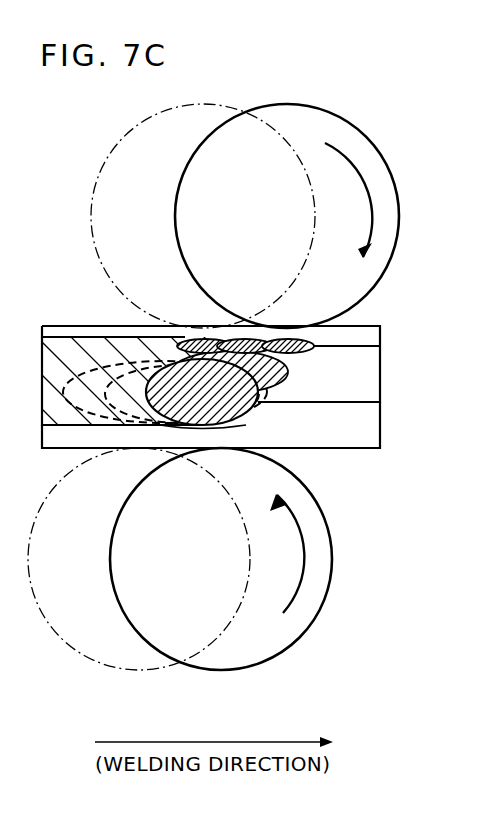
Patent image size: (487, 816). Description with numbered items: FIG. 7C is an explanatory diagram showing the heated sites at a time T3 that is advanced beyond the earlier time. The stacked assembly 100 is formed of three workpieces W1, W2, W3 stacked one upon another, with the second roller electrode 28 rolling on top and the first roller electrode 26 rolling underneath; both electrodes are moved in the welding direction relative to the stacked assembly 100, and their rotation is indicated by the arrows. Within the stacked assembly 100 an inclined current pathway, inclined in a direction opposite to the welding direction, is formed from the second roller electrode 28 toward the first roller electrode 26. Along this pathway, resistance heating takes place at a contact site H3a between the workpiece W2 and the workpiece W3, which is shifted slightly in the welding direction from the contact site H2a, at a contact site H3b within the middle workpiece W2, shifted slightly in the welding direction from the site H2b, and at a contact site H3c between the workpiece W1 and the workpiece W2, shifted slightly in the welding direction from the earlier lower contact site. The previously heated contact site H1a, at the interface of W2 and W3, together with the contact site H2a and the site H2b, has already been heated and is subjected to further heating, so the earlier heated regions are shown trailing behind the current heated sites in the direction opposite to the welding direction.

The second roller electrode 28 is at (95, 223).
The first roller electrode 26 is at (318, 598).
The stacked assembly 100 is at (243, 350).
The workpiece W1 is at (350, 435).
The workpiece W2 is at (368, 383).
The workpiece W3 is at (368, 335).
The contact site (first site) H1a is at (196, 340).
The contact site (second site) H2a is at (243, 342).
The site (third site) H2b is at (209, 342).
The contact site H3a is at (292, 340).
The contact site H3b is at (272, 374).
The contact site H3c is at (204, 426).